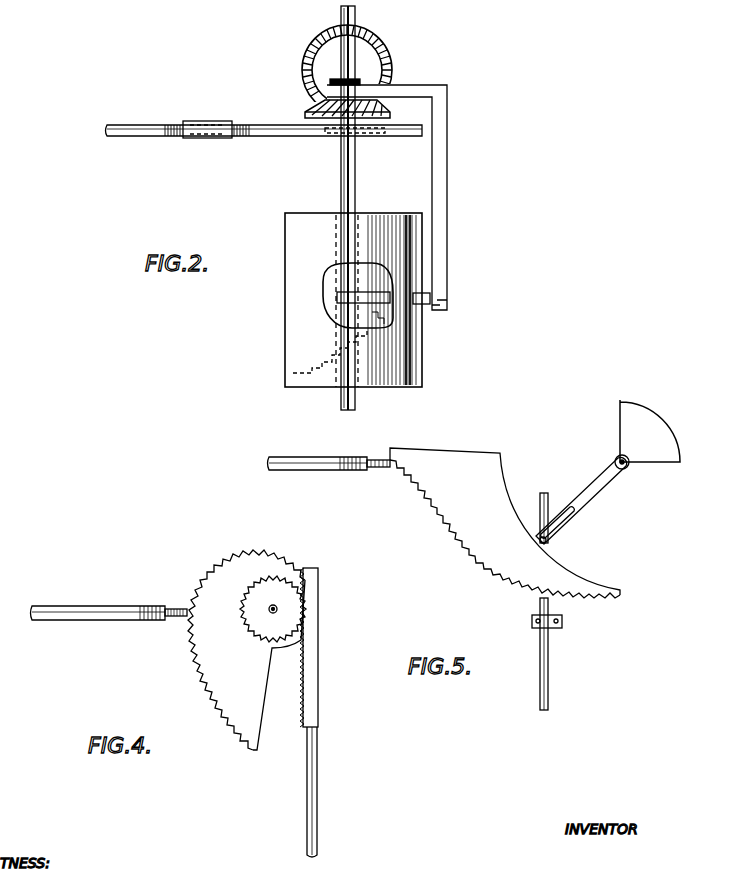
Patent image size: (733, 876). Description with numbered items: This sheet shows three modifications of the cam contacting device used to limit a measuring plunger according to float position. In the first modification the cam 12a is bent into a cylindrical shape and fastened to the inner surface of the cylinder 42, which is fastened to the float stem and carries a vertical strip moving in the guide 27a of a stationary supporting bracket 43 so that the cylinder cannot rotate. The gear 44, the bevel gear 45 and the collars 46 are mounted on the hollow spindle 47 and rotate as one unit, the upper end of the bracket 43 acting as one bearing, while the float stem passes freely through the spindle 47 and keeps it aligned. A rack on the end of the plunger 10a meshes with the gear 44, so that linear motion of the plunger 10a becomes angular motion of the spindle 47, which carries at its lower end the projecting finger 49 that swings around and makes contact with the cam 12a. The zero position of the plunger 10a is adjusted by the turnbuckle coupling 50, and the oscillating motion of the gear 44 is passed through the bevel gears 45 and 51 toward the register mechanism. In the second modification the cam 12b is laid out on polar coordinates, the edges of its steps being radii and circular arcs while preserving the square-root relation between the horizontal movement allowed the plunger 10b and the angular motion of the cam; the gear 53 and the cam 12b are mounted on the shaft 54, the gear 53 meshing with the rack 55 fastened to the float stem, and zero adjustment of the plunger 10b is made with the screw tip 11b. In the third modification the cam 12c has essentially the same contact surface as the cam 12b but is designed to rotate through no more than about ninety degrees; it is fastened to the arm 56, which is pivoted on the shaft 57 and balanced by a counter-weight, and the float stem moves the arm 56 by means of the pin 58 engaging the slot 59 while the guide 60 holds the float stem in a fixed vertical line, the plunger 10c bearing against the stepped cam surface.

In FIG. 2, the plunger 10a is at (148, 128).
In FIG. 2, the turnbuckle coupling 50 is at (207, 121).
In FIG. 2, the collars 46 is at (335, 80).
In FIG. 2, the bevel gear 45 is at (325, 104).
In FIG. 2, the bevel gear 51 is at (390, 70).
In FIG. 2, the gear 44 is at (366, 138).
In FIG. 2, the hollow spindle 47 is at (341, 178).
In FIG. 2, the stationary supporting bracket 43 is at (445, 178).
In FIG. 2, the cylinder 42 is at (286, 332).
In FIG. 2, the cam 12a is at (380, 318).
In FIG. 2, the projecting finger 49 is at (375, 298).
In FIG. 2, the guide 27a is at (430, 298).
In FIG. 4, the plunger 10b is at (99, 606).
In FIG. 4, the screw tip 11b is at (180, 618).
In FIG. 4, the cam 12b is at (211, 568).
In FIG. 4, the gear 53 is at (248, 619).
In FIG. 4, the shaft 54 is at (278, 608).
In FIG. 4, the rack 55 is at (318, 665).
In FIG. 5, the plunger 10c is at (321, 471).
In FIG. 5, the cam 12c is at (470, 554).
In FIG. 5, the arm 56 is at (593, 484).
In FIG. 5, the shaft 57 is at (618, 460).
In FIG. 5, the pin 58 is at (550, 543).
In FIG. 5, the slot 59 is at (565, 512).
In FIG. 5, the guide 60 is at (532, 620).